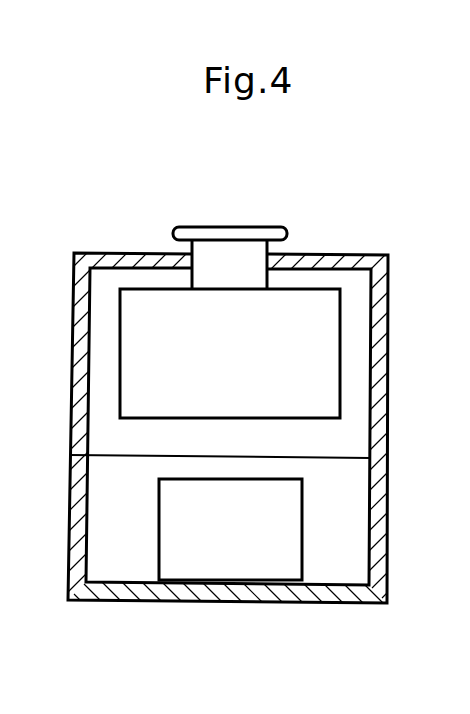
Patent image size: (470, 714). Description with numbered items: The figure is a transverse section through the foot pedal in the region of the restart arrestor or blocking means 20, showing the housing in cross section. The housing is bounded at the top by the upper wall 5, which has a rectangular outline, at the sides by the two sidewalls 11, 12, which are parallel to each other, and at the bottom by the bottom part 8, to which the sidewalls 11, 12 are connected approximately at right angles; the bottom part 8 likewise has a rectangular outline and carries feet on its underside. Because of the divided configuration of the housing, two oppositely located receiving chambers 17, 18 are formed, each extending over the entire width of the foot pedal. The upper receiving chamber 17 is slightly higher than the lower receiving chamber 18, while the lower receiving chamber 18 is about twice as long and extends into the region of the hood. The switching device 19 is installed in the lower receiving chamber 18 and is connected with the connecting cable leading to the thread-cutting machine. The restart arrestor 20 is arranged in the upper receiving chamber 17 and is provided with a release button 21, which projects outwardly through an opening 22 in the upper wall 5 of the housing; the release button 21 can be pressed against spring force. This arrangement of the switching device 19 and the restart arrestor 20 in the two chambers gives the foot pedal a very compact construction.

The upper wall 5 is at (122, 262).
The bottom part 8 is at (270, 593).
The sidewall 11 is at (82, 372).
The sidewall 12 is at (372, 383).
The upper receiving chamber 17 is at (355, 312).
The lower receiving chamber 18 is at (350, 517).
The switching device 19 is at (217, 570).
The restart arrestor 20 is at (162, 385).
The release button 21 is at (259, 237).
The opening 22 is at (272, 252).